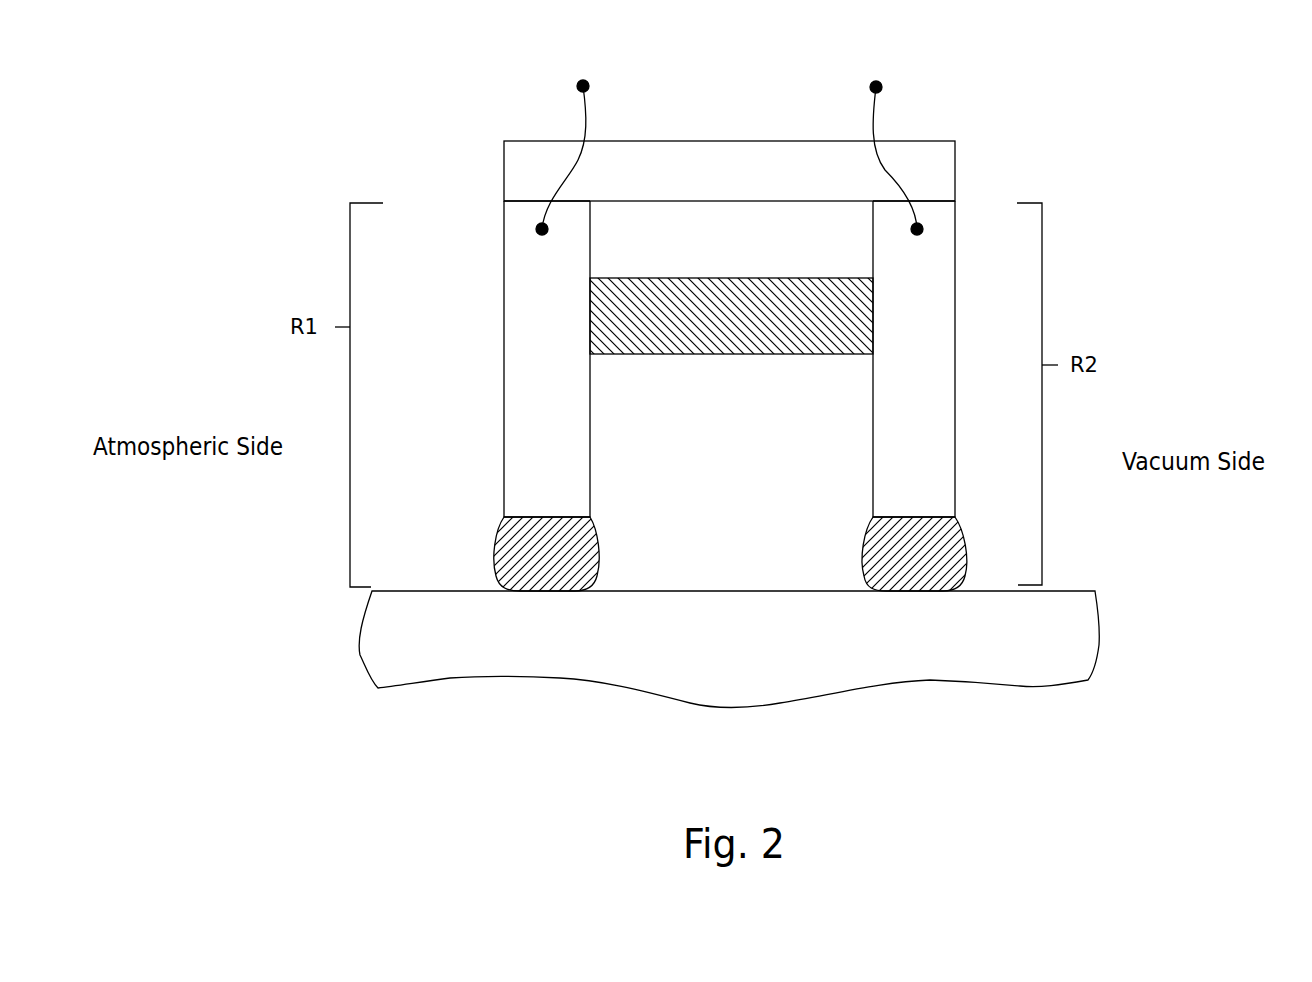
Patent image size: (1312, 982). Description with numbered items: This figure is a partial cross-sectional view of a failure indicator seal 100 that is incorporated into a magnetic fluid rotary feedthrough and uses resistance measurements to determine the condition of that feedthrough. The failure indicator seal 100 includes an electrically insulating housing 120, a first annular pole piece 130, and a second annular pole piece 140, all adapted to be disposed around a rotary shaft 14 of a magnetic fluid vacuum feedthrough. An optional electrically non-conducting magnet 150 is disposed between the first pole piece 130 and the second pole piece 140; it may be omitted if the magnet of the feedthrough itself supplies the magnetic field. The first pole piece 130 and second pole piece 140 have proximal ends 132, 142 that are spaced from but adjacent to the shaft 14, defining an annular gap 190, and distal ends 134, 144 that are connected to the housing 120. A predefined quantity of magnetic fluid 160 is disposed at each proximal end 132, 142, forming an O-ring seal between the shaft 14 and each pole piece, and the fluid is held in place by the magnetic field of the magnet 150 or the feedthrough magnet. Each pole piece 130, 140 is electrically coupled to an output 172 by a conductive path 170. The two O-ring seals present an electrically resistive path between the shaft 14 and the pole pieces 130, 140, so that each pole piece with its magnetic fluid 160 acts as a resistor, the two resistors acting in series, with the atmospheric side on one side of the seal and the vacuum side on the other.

The failure indicator seal 100 is at (322, 180).
The housing 120 is at (663, 142).
The first annular pole piece 130 is at (503, 427).
The proximal end 132 is at (540, 517).
The distal end 134 is at (528, 203).
The second annular pole piece 140 is at (955, 380).
The proximal end 142 is at (910, 517).
The distal end 144 is at (932, 202).
The electrically non-conducting magnet 150 is at (754, 355).
The magnetic fluid 160 is at (541, 567).
The conductive path 170 is at (583, 123).
The output 172 is at (585, 80).
The annular gap 190 is at (830, 567).
The rotary shaft 14 is at (722, 668).